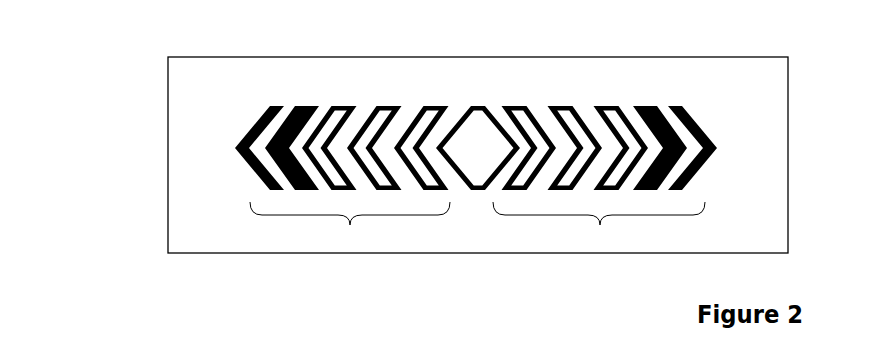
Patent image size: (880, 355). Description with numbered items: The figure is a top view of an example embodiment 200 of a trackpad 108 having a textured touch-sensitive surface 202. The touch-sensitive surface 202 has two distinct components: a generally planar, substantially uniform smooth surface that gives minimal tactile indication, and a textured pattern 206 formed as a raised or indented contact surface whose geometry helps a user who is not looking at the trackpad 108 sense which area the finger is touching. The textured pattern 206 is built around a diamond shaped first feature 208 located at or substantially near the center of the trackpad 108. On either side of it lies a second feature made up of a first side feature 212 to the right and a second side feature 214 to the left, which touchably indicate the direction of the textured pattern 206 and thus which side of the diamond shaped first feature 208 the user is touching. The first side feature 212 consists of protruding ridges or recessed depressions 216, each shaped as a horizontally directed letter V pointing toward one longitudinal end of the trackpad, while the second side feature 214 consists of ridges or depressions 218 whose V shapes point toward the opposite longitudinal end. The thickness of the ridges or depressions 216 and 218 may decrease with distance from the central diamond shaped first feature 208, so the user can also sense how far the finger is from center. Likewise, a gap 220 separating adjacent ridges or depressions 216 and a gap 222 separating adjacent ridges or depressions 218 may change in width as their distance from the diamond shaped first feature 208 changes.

The example embodiment 200 is at (126, 96).
The trackpad 108 is at (191, 265).
The touch-sensitive surface 202 is at (765, 232).
The textured pattern 206 is at (472, 227).
The diamond shaped first feature 208 is at (478, 122).
The first side feature 212 is at (599, 228).
The second side feature 214 is at (350, 226).
The ridges or depressions 216 is at (600, 104).
The ridges or depressions 218 is at (342, 103).
The gap 220 is at (700, 147).
The gap 222 is at (277, 168).